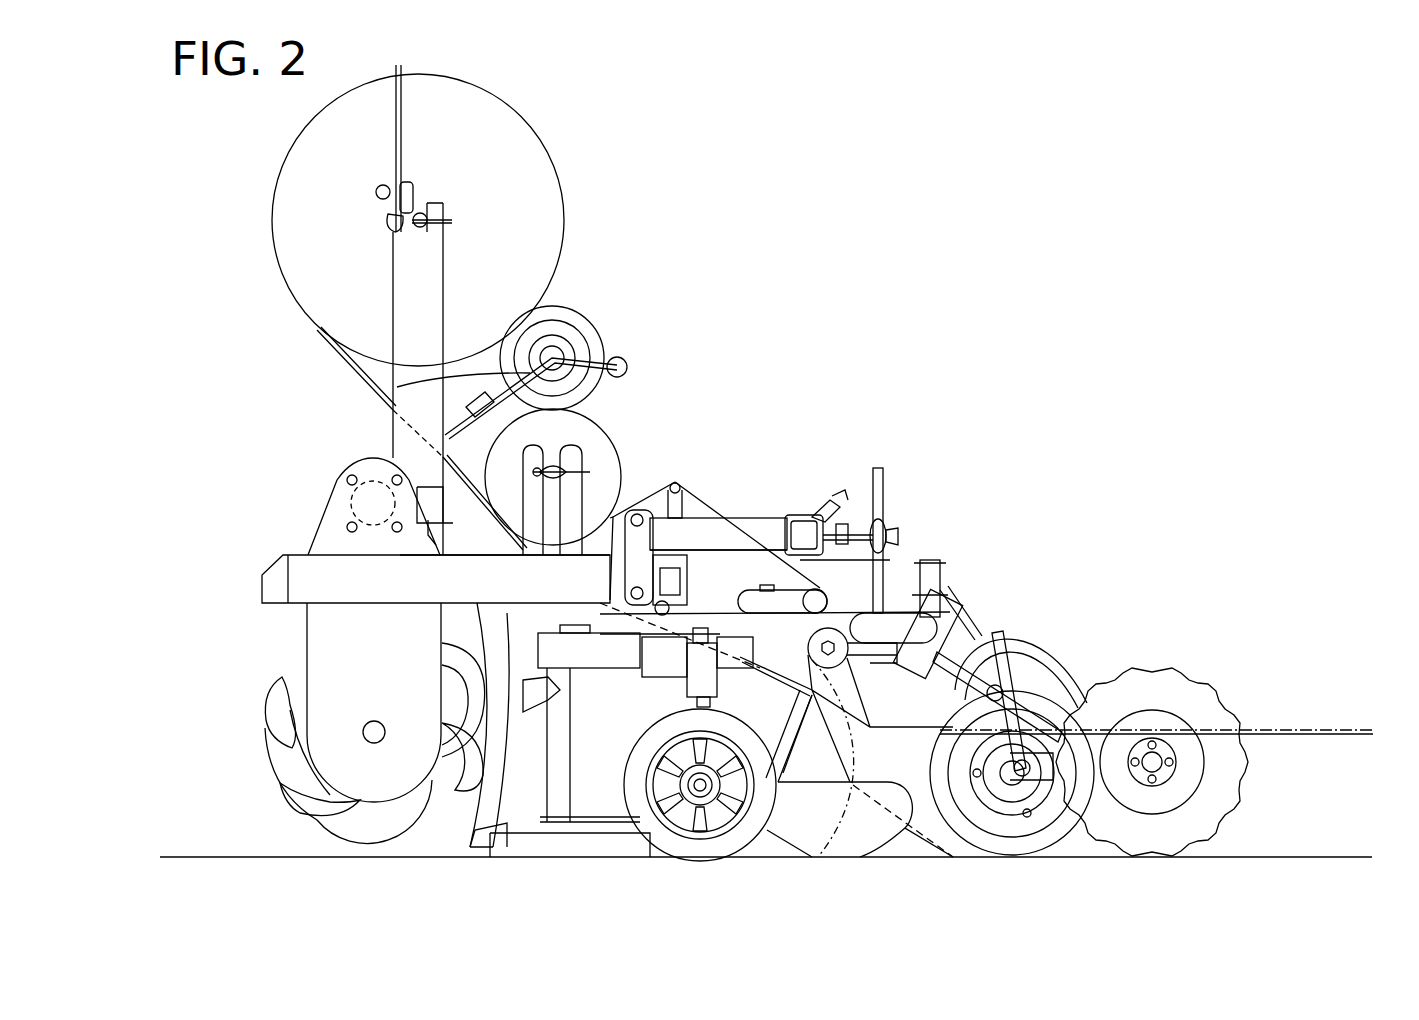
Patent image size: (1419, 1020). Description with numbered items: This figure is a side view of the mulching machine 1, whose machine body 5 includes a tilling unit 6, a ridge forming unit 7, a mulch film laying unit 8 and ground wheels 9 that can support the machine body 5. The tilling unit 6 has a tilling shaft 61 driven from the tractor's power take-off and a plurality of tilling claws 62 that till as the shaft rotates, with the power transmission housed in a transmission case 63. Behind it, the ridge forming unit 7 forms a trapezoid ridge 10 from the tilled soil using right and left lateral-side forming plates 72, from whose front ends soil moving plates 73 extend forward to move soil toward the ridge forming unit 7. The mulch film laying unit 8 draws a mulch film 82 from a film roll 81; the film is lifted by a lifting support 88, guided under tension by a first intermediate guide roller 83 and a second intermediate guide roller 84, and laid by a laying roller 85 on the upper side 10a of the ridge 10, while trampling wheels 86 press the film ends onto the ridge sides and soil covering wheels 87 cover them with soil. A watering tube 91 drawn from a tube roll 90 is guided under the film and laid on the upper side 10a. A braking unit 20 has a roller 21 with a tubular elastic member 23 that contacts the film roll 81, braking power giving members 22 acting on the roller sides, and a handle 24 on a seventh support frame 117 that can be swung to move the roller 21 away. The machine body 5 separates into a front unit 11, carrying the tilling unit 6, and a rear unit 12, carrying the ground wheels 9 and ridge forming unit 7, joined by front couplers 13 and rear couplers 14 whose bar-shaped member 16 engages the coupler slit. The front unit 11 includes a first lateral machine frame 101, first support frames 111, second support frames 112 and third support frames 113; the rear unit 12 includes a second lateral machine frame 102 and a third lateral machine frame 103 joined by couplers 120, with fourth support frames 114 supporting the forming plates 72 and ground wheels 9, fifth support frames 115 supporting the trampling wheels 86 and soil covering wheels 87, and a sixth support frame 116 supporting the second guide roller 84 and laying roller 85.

The mulching machine 1 is at (968, 247).
The machine body 5 is at (740, 411).
The tilling unit 6 is at (237, 705).
The ridge forming unit 7 is at (590, 860).
The mulch film laying unit 8 is at (976, 528).
The ground wheels 9 is at (735, 850).
The ridge 10 is at (1292, 850).
The upper side of the ridge 10a is at (1278, 729).
The front unit 11 is at (392, 860).
The rear unit 12 is at (940, 858).
The front couplers 13 is at (626, 512).
The rear couplers 14 is at (650, 650).
The bar-shaped member 16 is at (700, 520).
The braking unit 20 is at (562, 306).
The roller 21 is at (580, 328).
The braking power giving members 22 is at (572, 374).
The elastic member 23 is at (603, 345).
The handle 24 is at (630, 362).
The tilling shaft 61 is at (365, 735).
The tilling claws 62 is at (292, 805).
The transmission case 63 is at (320, 665).
The lateral-side forming plates 72 is at (578, 795).
The soil moving plates 73 is at (523, 800).
The film roll 81 is at (605, 470).
The mulch film 82 is at (785, 500).
The first intermediate guide roller 83 is at (820, 602).
The second intermediate guide roller 84 is at (845, 658).
The laying roller 85 is at (985, 628).
The trampling wheels 86 is at (1068, 690).
The soil covering wheels 87 is at (1190, 690).
The lifting support 88 is at (677, 478).
The tube roll 90 is at (312, 182).
The watering tube 91 is at (440, 515).
The first lateral machine frame 101 is at (350, 500).
The second lateral machine frame 102 is at (688, 588).
The third lateral machine frame 103 is at (808, 530).
The first support frames 111 is at (300, 580).
The second support frames 112 is at (512, 556).
The third support frames 113 is at (430, 305).
The fourth support frames 114 is at (700, 665).
The fifth support frames 115 is at (770, 652).
The sixth support frame 116 is at (882, 522).
The seventh support frame 117 is at (497, 383).
The couplers 120 is at (760, 500).